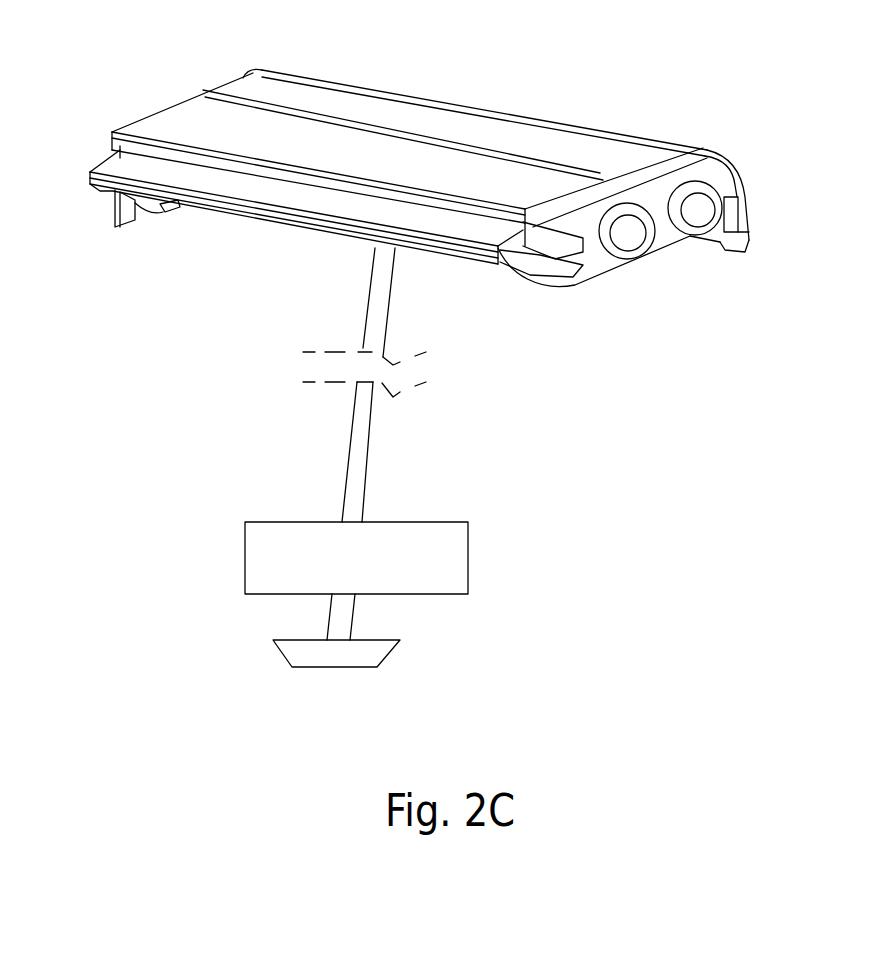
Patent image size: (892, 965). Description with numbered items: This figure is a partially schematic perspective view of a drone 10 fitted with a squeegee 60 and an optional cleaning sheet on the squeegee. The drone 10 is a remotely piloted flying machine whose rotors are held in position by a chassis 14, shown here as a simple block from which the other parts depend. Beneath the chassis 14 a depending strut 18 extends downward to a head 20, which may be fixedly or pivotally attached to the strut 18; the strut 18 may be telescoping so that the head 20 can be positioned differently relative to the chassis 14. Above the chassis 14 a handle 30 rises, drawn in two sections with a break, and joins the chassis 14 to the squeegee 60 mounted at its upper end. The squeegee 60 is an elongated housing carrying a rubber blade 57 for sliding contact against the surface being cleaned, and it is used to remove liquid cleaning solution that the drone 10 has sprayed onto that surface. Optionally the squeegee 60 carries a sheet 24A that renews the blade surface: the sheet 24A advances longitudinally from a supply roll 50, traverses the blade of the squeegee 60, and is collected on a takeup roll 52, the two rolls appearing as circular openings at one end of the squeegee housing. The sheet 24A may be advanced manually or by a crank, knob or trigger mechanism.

The drone 10 is at (705, 463).
The squeegee 60 is at (515, 77).
The sheet 24A is at (298, 193).
The handle 30 is at (382, 302).
The rubber blade 57 is at (505, 262).
The takeup roll 52 is at (628, 238).
The supply roll 50 is at (702, 215).
The chassis 14 is at (410, 578).
The strut 18 is at (340, 614).
The head 20 is at (336, 653).